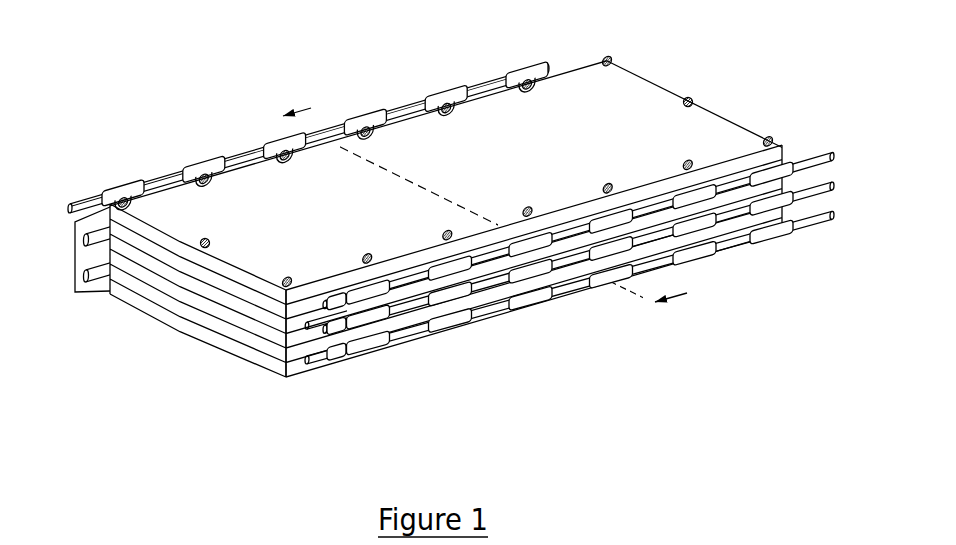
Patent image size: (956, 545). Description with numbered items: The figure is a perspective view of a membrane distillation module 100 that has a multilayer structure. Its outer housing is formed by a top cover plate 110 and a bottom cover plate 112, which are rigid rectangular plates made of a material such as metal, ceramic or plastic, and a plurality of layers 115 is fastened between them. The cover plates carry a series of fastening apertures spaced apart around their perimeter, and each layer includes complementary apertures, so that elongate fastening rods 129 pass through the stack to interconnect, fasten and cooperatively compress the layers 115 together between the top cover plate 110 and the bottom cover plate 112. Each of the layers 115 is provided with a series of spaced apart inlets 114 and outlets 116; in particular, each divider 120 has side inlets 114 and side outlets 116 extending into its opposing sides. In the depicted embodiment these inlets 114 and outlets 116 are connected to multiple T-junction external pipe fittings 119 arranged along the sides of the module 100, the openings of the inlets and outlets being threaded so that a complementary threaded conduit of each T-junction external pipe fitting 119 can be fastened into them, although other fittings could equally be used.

The membrane distillation module 100 is at (441, 199).
The top cover plate 110 is at (628, 90).
The bottom cover plate 112 is at (223, 343).
The inlets 114 is at (148, 147).
The layers 115 is at (75, 258).
The outlets 116 is at (198, 133).
The T-junction external pipe fittings 119 is at (383, 112).
The divider 120 is at (163, 257).
The fastening rod 129 is at (693, 100).